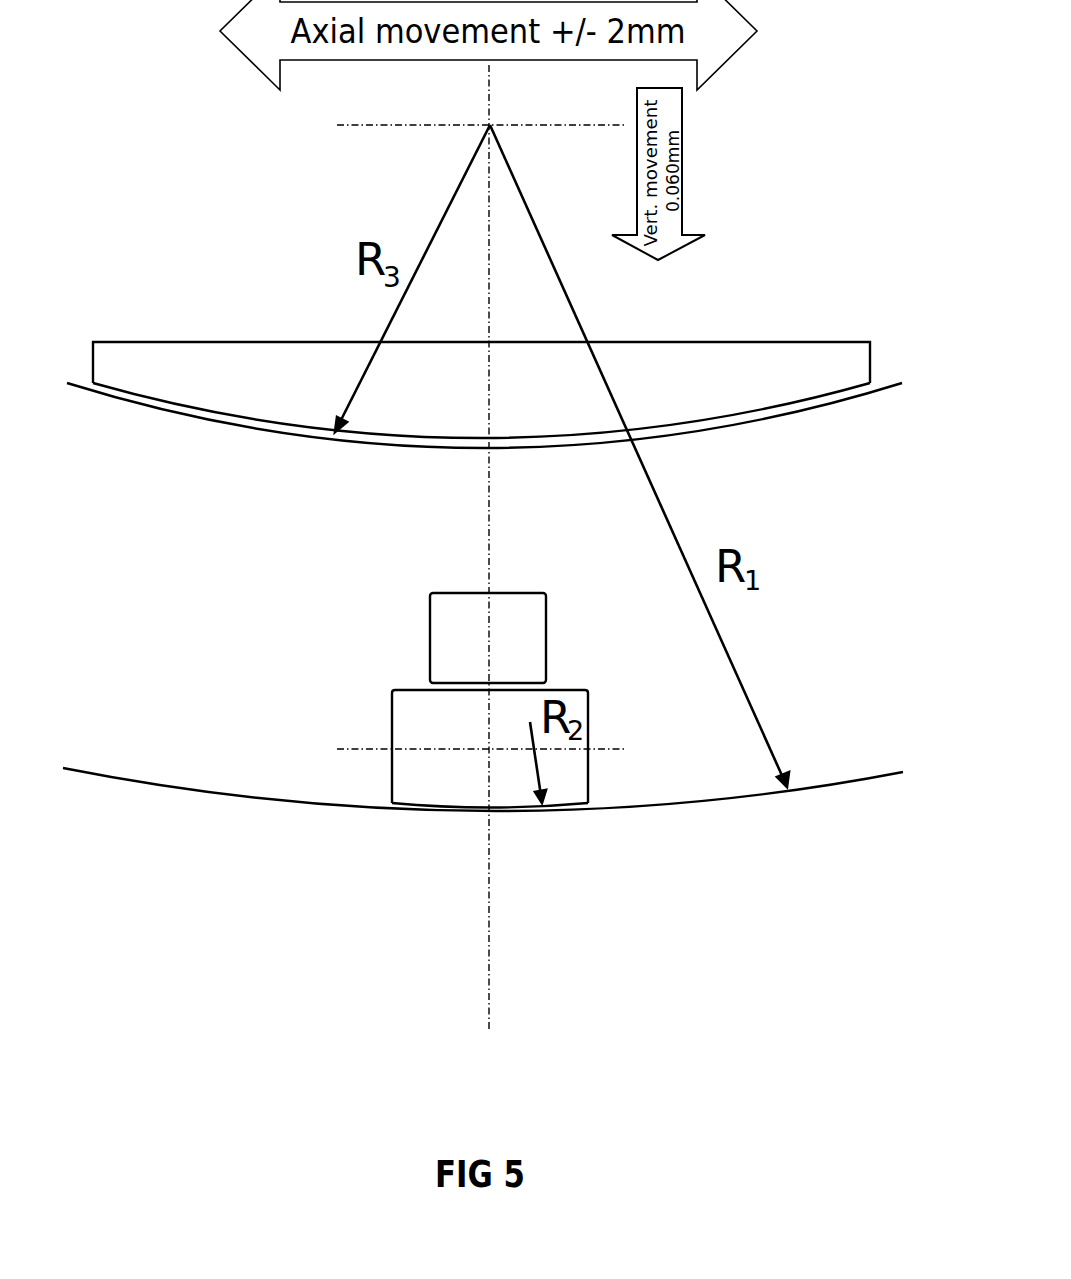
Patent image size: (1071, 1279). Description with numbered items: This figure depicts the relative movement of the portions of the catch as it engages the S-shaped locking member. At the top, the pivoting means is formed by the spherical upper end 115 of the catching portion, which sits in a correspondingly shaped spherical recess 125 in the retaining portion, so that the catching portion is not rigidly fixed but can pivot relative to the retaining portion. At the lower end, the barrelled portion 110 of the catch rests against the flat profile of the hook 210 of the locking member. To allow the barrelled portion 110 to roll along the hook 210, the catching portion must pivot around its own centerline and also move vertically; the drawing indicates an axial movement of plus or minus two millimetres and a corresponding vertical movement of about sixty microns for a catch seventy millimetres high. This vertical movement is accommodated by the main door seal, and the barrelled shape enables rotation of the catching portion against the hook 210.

The barrelled portion 110 is at (558, 780).
The spherical upper end 115 is at (707, 387).
The spherical recess 125 is at (817, 407).
The hook 210 is at (515, 635).